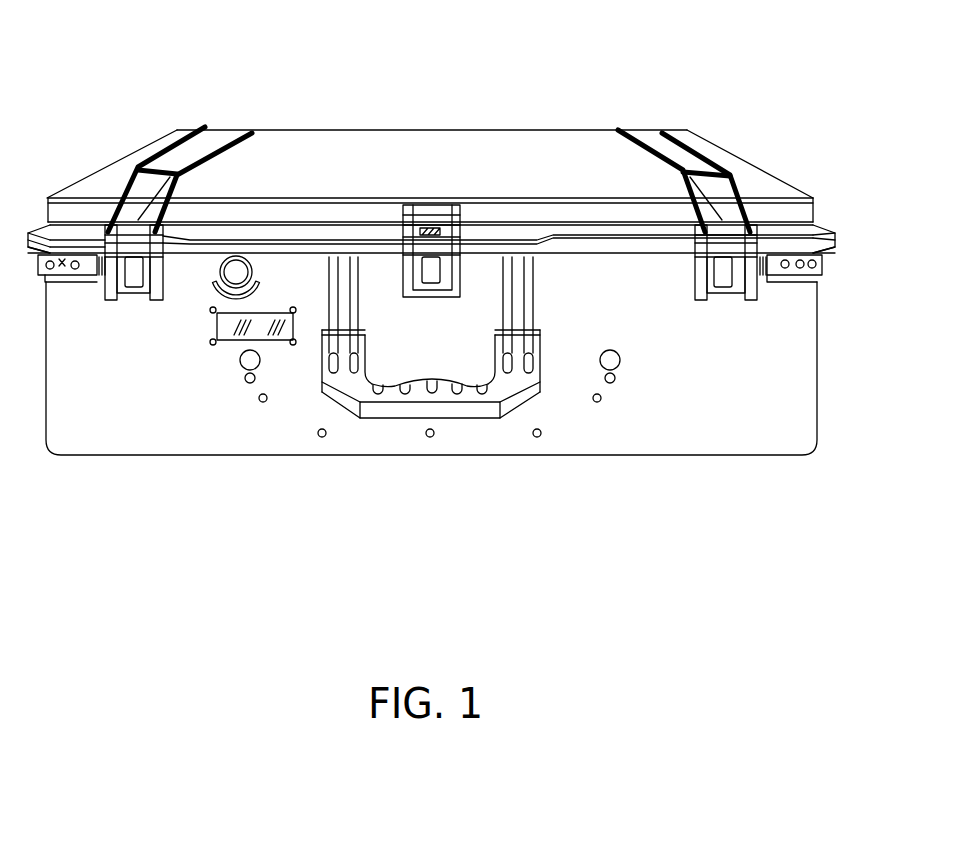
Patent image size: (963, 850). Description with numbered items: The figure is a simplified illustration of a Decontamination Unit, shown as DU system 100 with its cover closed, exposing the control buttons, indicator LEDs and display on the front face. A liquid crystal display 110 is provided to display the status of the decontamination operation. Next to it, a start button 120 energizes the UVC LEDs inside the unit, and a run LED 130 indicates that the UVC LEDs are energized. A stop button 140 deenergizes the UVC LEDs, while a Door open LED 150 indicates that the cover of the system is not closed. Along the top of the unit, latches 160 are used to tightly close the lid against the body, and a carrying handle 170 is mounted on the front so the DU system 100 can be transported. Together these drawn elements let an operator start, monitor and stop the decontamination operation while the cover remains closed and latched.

The DU system 100 is at (837, 130).
The liquid crystal display 110 is at (223, 332).
The start button 120 is at (247, 368).
The run LED 130 is at (249, 385).
The stop button 140 is at (613, 362).
The Door open LED 150 is at (610, 385).
The latches 160 is at (645, 128).
The carrying handle 170 is at (408, 410).